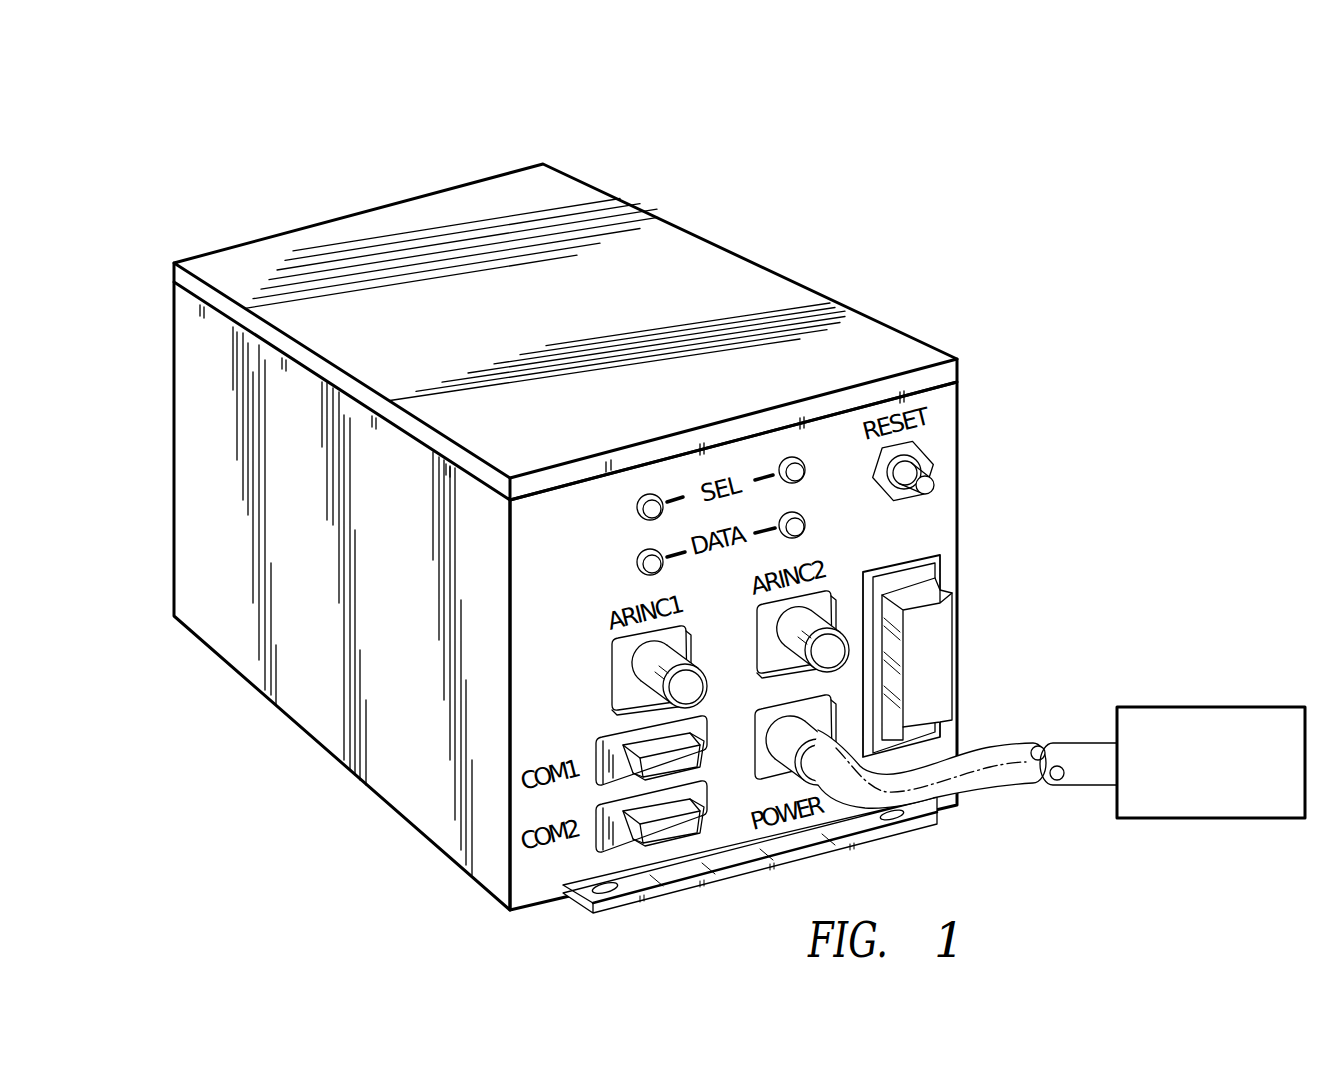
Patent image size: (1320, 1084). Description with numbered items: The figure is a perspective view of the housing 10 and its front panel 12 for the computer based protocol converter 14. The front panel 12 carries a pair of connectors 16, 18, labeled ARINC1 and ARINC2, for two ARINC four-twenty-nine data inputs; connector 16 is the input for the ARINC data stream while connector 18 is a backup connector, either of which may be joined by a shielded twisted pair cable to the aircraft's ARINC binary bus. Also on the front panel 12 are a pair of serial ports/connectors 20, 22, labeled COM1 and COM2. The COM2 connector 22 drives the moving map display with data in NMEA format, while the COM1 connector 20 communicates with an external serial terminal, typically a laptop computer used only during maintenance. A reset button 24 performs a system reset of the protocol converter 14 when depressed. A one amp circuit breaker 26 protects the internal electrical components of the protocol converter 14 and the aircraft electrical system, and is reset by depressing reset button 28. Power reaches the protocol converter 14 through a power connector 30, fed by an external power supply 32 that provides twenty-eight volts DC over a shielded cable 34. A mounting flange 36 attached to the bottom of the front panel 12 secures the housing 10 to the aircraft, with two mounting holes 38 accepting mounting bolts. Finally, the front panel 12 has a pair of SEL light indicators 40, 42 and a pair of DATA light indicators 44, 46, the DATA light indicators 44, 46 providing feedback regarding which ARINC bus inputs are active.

The housing 10 is at (915, 334).
The front panel 12 is at (897, 523).
The protocol converter 14 is at (1031, 262).
The connector 16 is at (608, 696).
The connector 18 is at (838, 668).
The RS-232 port/connector 20 is at (610, 773).
The RS-232 port/connector 22 is at (612, 840).
The reset button 24 is at (938, 488).
The circuit breaker 26 is at (966, 620).
The reset button 28 is at (930, 697).
The power connector 30 is at (780, 744).
The external power supply 32 is at (1131, 712).
The shielded cable 34 is at (971, 786).
The mounting flange 36 is at (675, 873).
The mounting holes 38 is at (606, 895).
The SEL light indicator 40 is at (650, 521).
The SEL light indicator 42 is at (782, 464).
The DATA light indicator 44 is at (642, 573).
The DATA light indicator 46 is at (806, 518).